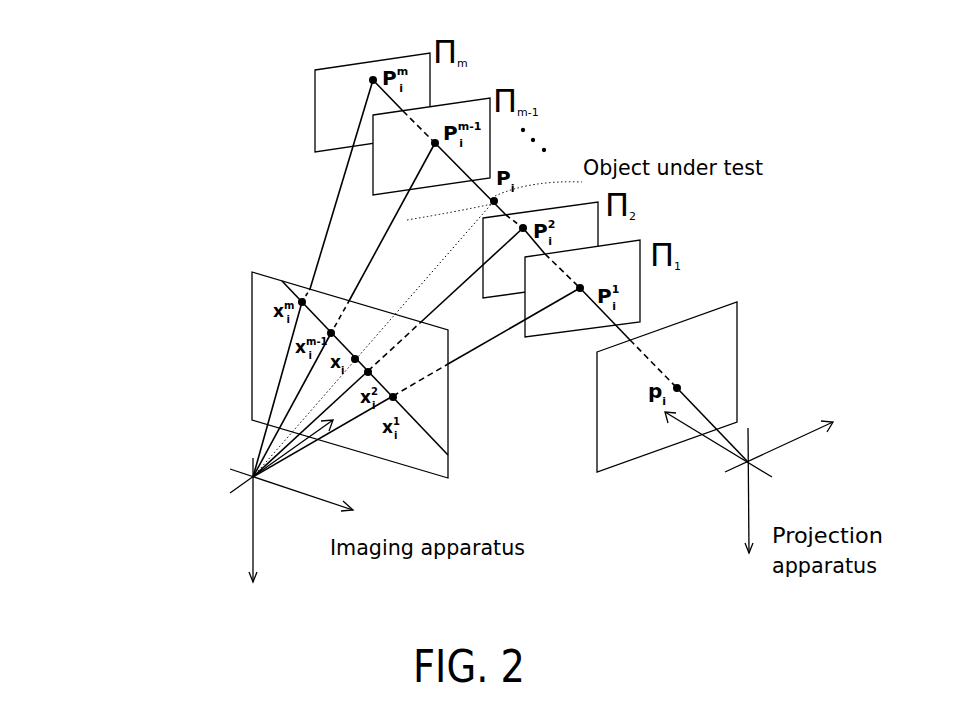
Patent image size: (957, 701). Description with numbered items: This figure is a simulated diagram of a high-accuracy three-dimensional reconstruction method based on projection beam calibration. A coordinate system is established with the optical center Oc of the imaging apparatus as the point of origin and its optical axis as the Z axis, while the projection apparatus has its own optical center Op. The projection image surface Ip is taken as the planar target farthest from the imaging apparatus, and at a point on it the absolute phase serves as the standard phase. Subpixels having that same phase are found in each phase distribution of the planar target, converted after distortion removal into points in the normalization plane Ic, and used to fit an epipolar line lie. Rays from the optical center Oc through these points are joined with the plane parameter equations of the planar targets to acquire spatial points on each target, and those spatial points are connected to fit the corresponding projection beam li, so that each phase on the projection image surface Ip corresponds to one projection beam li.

The normalization plane Ic is at (227, 371).
The projection image surface Ip is at (760, 374).
The projection beam li is at (365, 72).
The epipolar line lie is at (434, 376).
The optical center of the camera Oc is at (291, 501).
The optical center of the projection apparatus Op is at (749, 482).